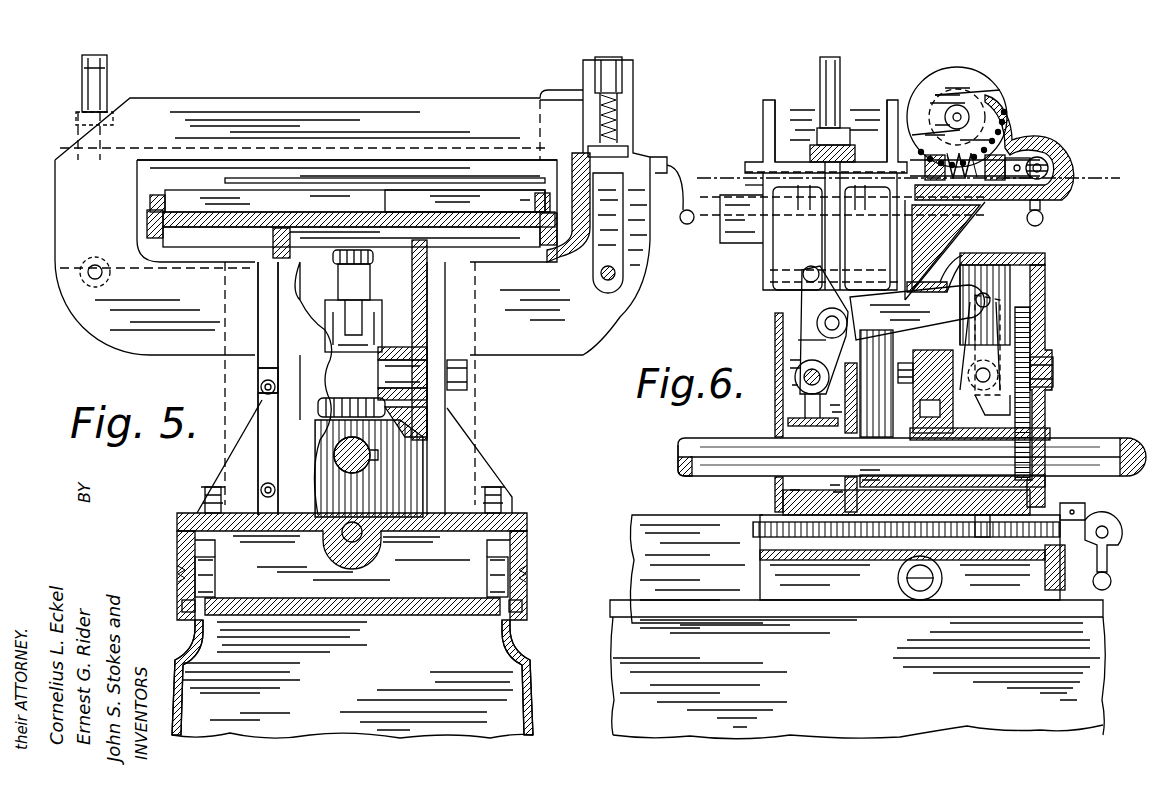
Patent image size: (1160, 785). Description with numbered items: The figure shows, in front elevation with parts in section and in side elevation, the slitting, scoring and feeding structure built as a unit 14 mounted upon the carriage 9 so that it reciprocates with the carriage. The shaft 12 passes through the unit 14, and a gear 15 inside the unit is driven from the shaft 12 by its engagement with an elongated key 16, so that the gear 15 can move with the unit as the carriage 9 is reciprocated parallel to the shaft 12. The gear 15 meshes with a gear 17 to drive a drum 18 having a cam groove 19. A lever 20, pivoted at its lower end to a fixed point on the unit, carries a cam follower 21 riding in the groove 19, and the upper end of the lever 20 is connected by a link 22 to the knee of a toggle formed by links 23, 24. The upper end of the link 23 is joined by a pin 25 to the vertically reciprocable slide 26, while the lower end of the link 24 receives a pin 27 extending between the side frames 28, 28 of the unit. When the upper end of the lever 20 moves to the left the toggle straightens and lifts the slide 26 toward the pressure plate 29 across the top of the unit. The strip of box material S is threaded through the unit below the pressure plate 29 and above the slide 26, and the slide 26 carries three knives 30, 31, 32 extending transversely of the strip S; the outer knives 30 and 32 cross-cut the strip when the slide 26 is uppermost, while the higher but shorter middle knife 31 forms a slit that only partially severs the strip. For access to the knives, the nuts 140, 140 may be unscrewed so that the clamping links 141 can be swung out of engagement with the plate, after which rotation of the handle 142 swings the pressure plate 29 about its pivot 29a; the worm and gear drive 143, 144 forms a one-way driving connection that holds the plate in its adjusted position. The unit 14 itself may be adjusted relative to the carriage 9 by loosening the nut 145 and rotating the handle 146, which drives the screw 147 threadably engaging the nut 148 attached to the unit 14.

In FIG. 5, the carriage 9 is at (527, 525).
In FIG. 6, the carriage 9 is at (665, 522).
In FIG. 6, the shaft 12 is at (678, 452).
In FIG. 6, the unit 14 is at (1050, 422).
In FIG. 6, the gear 15 is at (1050, 497).
In FIG. 6, the elongated key 16 is at (1080, 455).
In FIG. 6, the gear 17 is at (1030, 345).
In FIG. 6, the drum 18 is at (1005, 305).
In FIG. 6, the cam groove 19 is at (1040, 410).
In FIG. 6, the lever 20 is at (998, 330).
In FIG. 6, the cam follower 21 is at (993, 375).
In FIG. 5, the link 22 is at (353, 320).
In FIG. 6, the link 22 is at (953, 293).
In FIG. 5, the link 23 is at (355, 303).
In FIG. 6, the link 23 is at (815, 302).
In FIG. 5, the link 24 is at (372, 357).
In FIG. 6, the link 24 is at (808, 350).
In FIG. 5, the pin 25 is at (378, 272).
In FIG. 6, the pin 25 is at (778, 316).
In FIG. 5, the slide 26 is at (270, 238).
In FIG. 6, the slide 26 is at (730, 245).
In FIG. 5, the pin 27 is at (388, 385).
In FIG. 6, the pin 27 is at (805, 388).
In FIG. 5, the side frames 28 is at (265, 400).
In FIG. 5, the pressure plate 29 is at (492, 170).
In FIG. 6, the pressure plate 29 is at (793, 118).
In FIG. 6, the pivot 29a is at (957, 117).
In FIG. 5, the knife 30 is at (520, 196).
In FIG. 6, the knife 30 is at (755, 190).
In FIG. 5, the middle knife 31 is at (270, 203).
In FIG. 6, the middle knife 31 is at (802, 210).
In FIG. 6, the knife 32 is at (865, 210).
In FIG. 5, the nuts or threaded members 140 is at (97, 58).
In FIG. 6, the nuts or threaded members 140 is at (832, 60).
In FIG. 5, the clamping links 141 is at (618, 273).
In FIG. 6, the handle 142 is at (1044, 217).
In FIG. 6, the worm 143 is at (990, 205).
In FIG. 6, the gear 144 is at (1008, 110).
In FIG. 5, the nut 145 is at (205, 490).
In FIG. 6, the handle 146 is at (1107, 590).
In FIG. 5, the screw 147 is at (354, 542).
In FIG. 6, the screw 147 is at (775, 522).
In FIG. 6, the nut 148 is at (903, 548).
In FIG. 5, the strip of box material S is at (238, 178).
In FIG. 6, the strip of box material S is at (1082, 178).